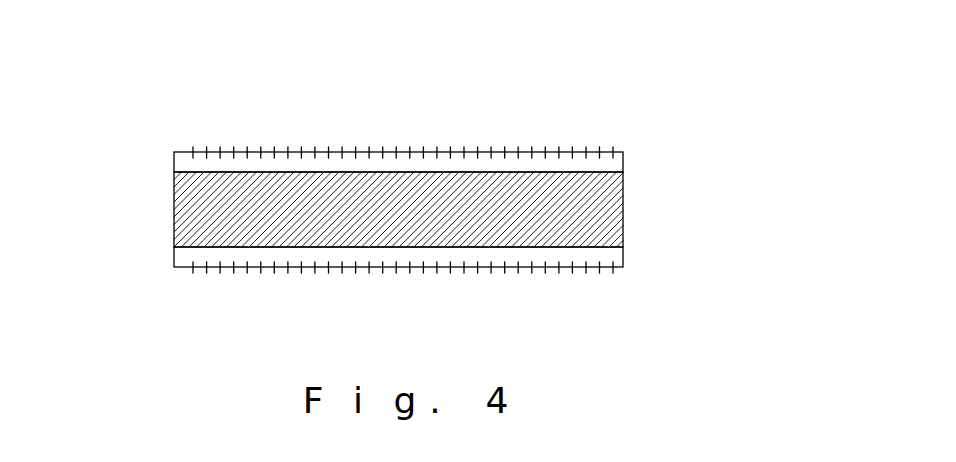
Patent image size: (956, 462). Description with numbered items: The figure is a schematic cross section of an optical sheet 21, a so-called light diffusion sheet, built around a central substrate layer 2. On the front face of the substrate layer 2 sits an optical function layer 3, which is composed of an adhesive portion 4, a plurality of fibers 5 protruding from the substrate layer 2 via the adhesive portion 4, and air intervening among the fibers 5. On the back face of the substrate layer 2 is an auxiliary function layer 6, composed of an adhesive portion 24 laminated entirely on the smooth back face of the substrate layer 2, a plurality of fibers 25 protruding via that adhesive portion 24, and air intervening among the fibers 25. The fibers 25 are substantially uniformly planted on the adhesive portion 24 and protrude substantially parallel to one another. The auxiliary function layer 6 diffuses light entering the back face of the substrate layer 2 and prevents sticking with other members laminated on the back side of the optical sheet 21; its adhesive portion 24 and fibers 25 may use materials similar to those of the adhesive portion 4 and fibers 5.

The optical sheet 21 is at (140, 97).
The optical function layer 3 is at (168, 148).
The adhesive portion 4 is at (625, 160).
The fibers 5 is at (613, 148).
The substrate layer 2 is at (625, 207).
The auxiliary function layer 6 is at (168, 248).
The adhesive portion 24 is at (625, 258).
The fibers 25 is at (614, 270).